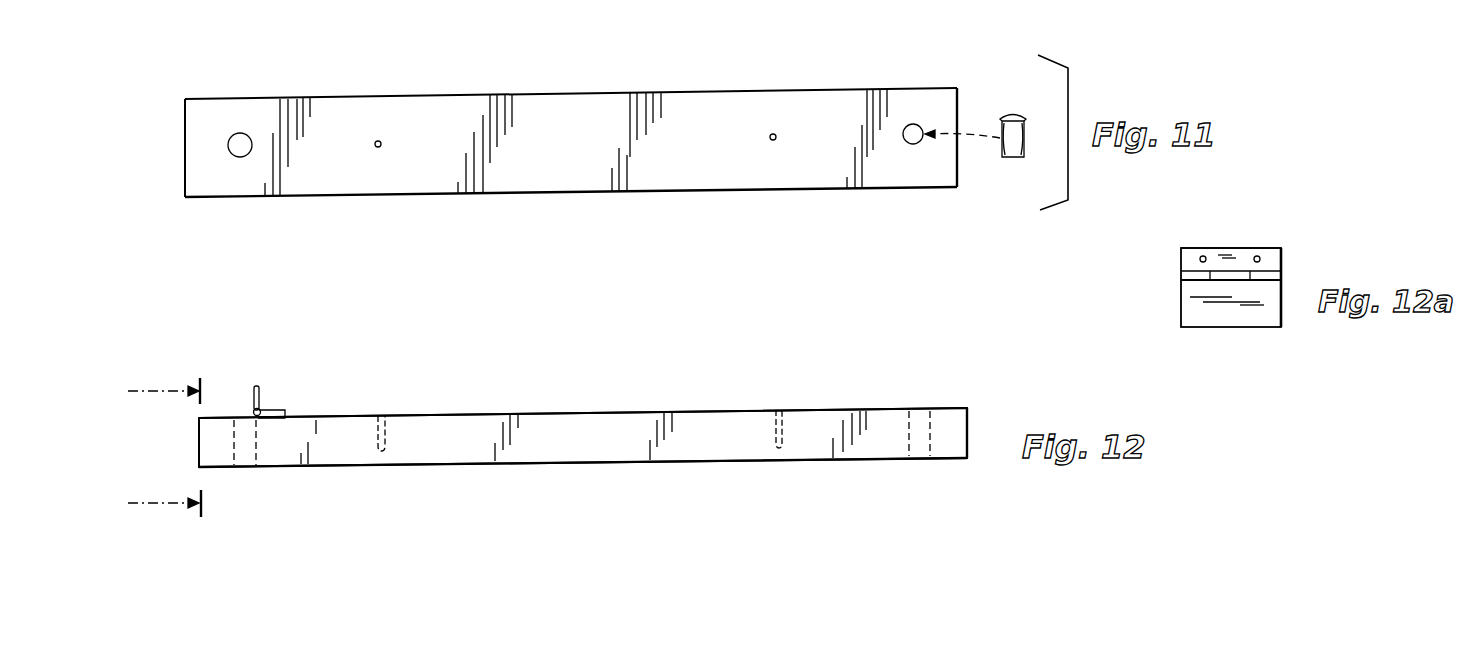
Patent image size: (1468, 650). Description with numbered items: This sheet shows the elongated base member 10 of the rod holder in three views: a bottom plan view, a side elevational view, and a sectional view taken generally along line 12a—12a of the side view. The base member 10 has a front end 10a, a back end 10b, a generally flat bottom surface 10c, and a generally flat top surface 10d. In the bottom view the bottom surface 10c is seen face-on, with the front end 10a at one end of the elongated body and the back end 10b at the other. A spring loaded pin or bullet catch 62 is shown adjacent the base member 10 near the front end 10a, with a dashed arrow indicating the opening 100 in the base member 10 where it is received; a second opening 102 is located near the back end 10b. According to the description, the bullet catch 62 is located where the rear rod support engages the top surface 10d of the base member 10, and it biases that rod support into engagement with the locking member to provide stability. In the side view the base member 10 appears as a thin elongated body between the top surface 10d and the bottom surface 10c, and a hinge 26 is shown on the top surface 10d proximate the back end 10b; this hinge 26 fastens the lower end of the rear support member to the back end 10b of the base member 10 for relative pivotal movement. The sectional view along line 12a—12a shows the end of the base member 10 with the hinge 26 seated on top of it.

In FIG. 12A, the base member 10 is at (1190, 288).
In FIG. 12, the base member 10 is at (240, 475).
In FIG. 11, the front end 10a is at (979, 73).
In FIG. 11, the back end 10b is at (185, 151).
In FIG. 12, the back end 10b is at (199, 428).
In FIG. 11, the bottom surface 10c is at (589, 169).
In FIG. 12, the bottom surface 10c is at (660, 466).
In FIG. 12, the top surface 10d is at (622, 413).
In FIG. 12, the line 12a— 12a is at (163, 437).
In FIG. 12A, the hinge 26 is at (1210, 249).
In FIG. 12, the hinge 26 is at (262, 392).
In FIG. 11, the bullet catch 62 is at (1012, 146).
In FIG. 11, the pin hole 100 is at (904, 126).
In FIG. 12, the pin hole 100 is at (968, 410).
In FIG. 11, the hole 102 is at (243, 133).